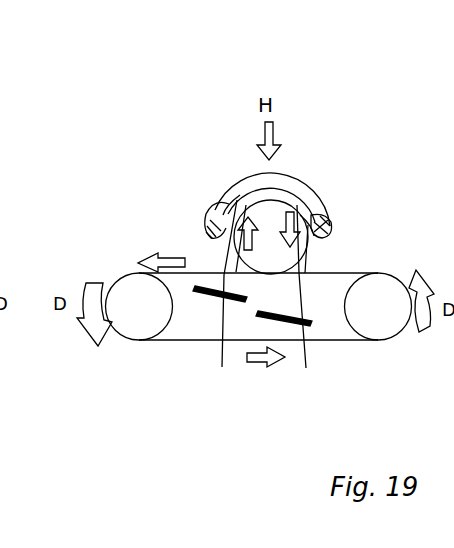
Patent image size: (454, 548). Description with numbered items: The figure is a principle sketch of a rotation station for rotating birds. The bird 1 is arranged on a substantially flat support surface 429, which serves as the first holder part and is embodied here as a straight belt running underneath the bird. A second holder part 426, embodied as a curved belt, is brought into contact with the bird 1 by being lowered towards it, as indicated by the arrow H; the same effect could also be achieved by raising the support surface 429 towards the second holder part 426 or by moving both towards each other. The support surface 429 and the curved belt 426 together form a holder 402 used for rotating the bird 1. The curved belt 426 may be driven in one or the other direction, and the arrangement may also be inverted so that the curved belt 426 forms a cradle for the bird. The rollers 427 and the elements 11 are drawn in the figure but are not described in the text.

The bird 1 is at (285, 189).
The blades 11 is at (222, 367).
The holder 402 is at (320, 187).
The second holder part 426 is at (223, 200).
The conveyor rollers 427 is at (166, 341).
The support surface 429 is at (330, 272).